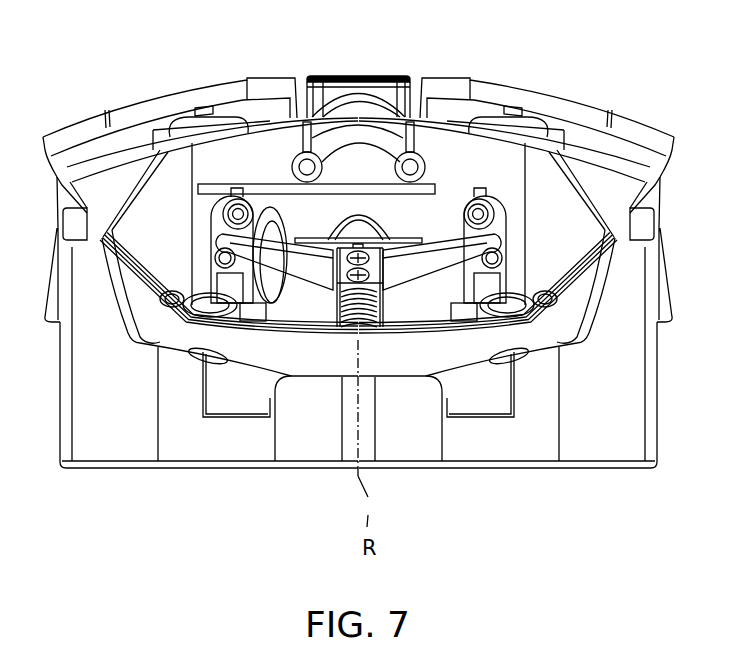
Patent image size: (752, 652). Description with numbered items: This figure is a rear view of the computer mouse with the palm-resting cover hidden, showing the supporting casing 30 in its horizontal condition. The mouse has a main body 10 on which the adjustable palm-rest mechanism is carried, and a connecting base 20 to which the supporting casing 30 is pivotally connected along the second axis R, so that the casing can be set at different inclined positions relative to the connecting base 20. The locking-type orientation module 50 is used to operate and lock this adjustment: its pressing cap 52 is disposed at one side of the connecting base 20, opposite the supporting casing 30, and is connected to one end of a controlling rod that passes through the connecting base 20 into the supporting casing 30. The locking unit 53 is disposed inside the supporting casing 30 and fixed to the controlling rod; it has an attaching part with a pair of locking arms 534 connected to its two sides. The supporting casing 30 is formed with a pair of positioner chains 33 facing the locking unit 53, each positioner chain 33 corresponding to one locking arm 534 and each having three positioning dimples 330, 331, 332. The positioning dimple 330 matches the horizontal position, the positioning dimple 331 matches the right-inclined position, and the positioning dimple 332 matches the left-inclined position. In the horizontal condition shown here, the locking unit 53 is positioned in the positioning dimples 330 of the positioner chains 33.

The main body 10 is at (505, 468).
The connecting base 20 is at (373, 110).
The supporting casing 30 is at (140, 348).
The positioner chain 33 is at (240, 202).
The positioning dimple 330 is at (223, 237).
The positioning dimple 331 is at (227, 213).
The positioning dimple 332 is at (215, 260).
The locking-type orientation module 50 is at (320, 78).
The pressing cap 52 is at (349, 86).
The locking unit 53 is at (445, 233).
The locking arm 534 is at (297, 265).